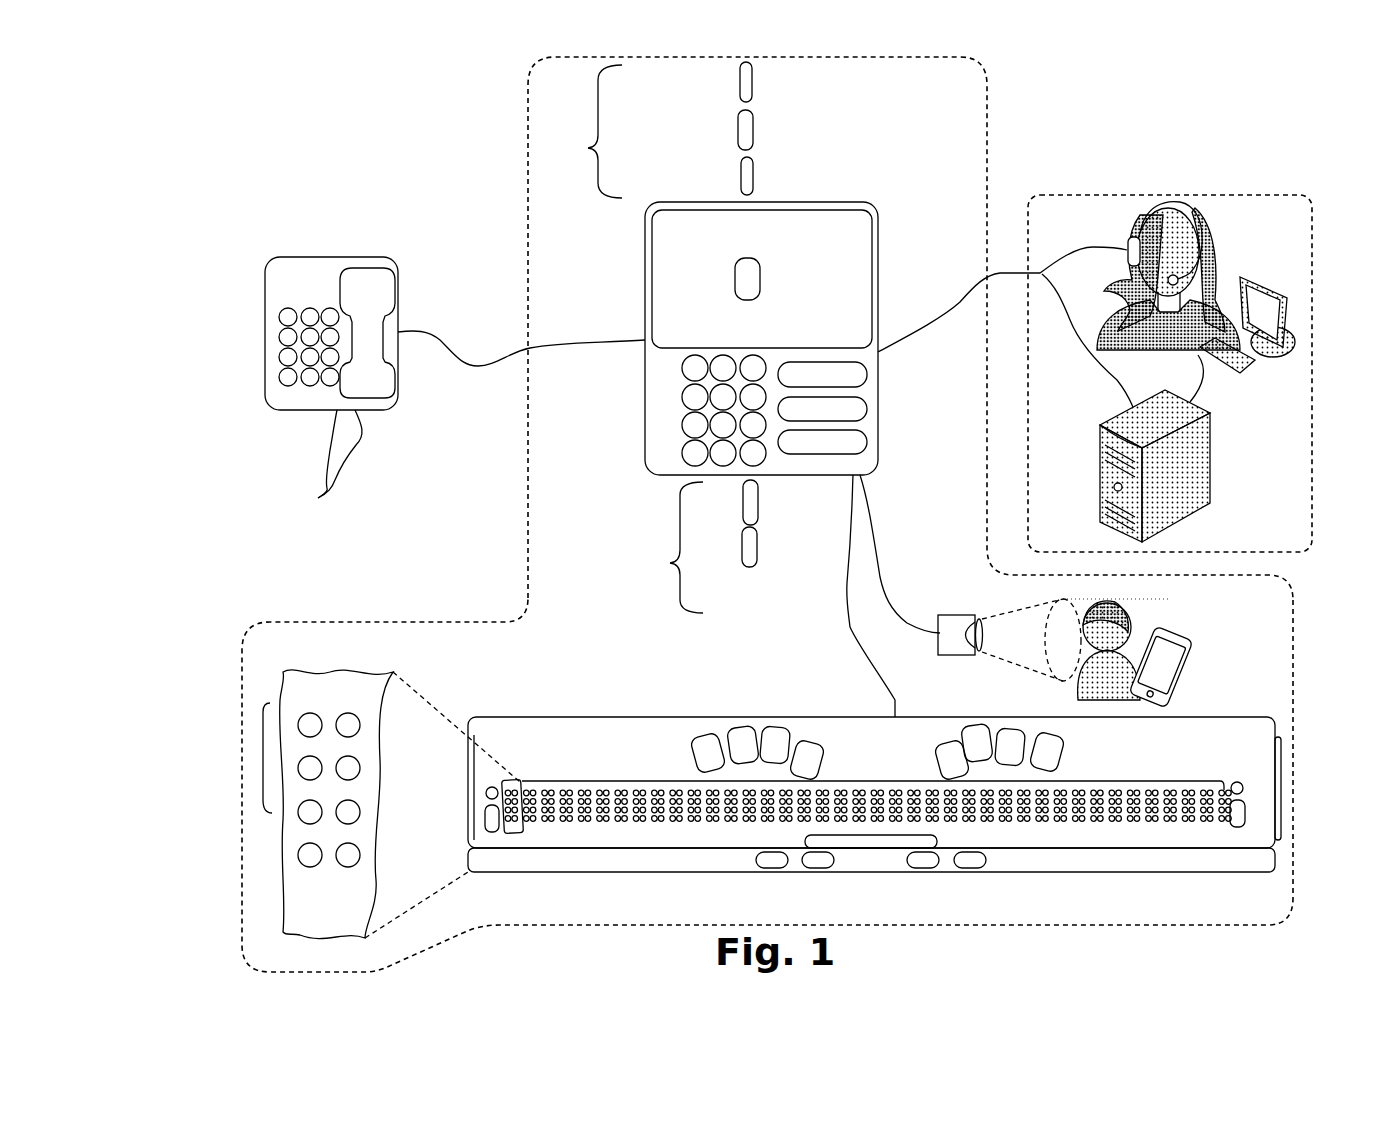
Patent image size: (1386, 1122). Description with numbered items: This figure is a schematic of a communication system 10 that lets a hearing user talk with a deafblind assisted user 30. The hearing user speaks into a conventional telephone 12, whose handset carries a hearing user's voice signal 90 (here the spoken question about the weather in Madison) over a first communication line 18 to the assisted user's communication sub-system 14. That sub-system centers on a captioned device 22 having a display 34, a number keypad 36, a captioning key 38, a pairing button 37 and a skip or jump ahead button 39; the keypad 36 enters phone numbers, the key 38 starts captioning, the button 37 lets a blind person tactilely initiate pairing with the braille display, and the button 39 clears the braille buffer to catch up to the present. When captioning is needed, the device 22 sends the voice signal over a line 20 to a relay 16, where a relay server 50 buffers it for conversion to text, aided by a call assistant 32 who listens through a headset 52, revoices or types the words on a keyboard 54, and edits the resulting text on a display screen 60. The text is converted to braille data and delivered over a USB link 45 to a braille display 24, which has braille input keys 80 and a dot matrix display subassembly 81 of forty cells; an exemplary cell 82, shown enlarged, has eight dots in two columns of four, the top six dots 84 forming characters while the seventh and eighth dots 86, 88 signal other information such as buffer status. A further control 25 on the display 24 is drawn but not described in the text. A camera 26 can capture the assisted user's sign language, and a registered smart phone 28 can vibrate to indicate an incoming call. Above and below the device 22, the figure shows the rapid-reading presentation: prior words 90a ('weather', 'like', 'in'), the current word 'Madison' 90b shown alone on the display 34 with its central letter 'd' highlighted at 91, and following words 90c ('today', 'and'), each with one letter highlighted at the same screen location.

The communication system 10 is at (1052, 143).
The conventional telephone 12 is at (265, 292).
The assisted user's communication sub-system 14 is at (528, 582).
The relay 16 is at (1170, 195).
The first communication link or line 18 is at (481, 363).
The line 20 is at (998, 272).
The captioned device 22 is at (645, 306).
The braille display 24 is at (870, 872).
The control button 25 is at (977, 866).
The camera 26 is at (957, 615).
The portable computing device 28 is at (1178, 640).
The assisted user 30 is at (1128, 615).
The call assistant 32 is at (1130, 230).
The display 34 is at (782, 319).
The number keypad 36 is at (678, 393).
The pairing button 37 is at (868, 375).
The captioning key 38 is at (868, 409).
The skip or jump ahead button 39 is at (868, 441).
The USB link 45 is at (846, 624).
The relay server 50 is at (1157, 513).
The headset 52 is at (1205, 265).
The keyboard 54 is at (1226, 373).
The display screen 60 is at (1285, 357).
The braille input keys 80 is at (827, 789).
The dot matrix output or display subassembly 81 is at (553, 779).
The character slot or cell 82 is at (374, 714).
The top six dots 84 is at (355, 806).
The seventh dot 86 is at (300, 856).
The eighth dot 88 is at (340, 862).
The hearing user's voice signal 90 is at (248, 97).
The subset of consecutive words 90a is at (588, 148).
The word 'Madison' 90b is at (803, 258).
The subset of subsequent words 90c is at (670, 563).
The highlighted character 91 is at (744, 256).